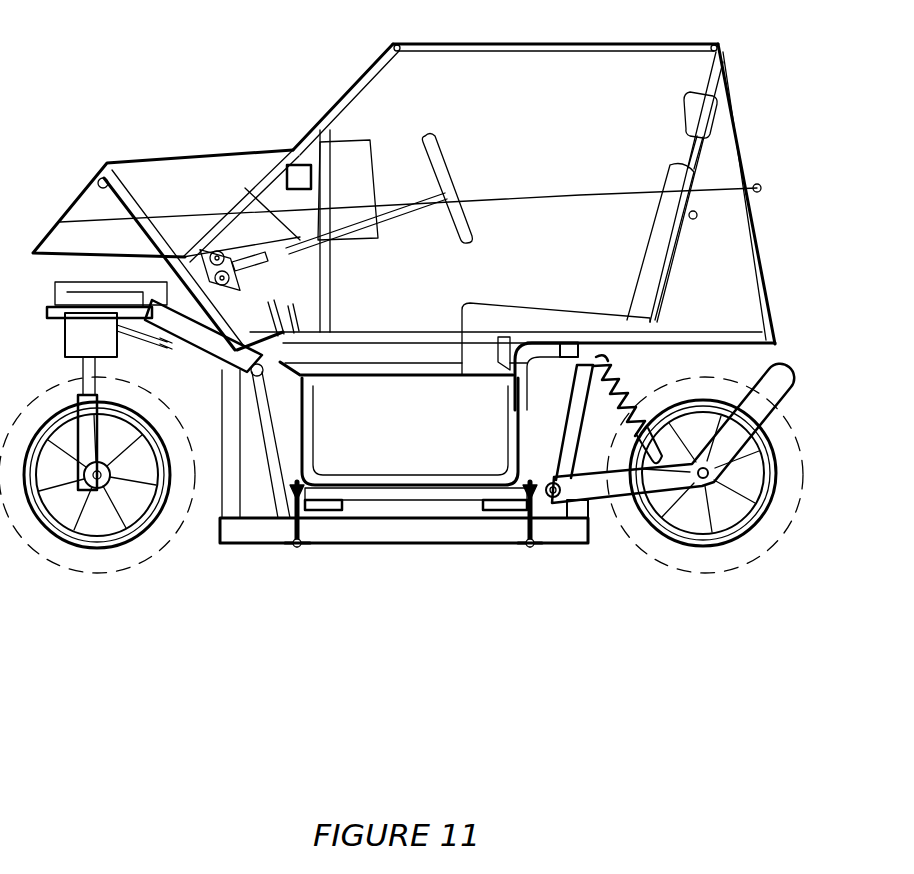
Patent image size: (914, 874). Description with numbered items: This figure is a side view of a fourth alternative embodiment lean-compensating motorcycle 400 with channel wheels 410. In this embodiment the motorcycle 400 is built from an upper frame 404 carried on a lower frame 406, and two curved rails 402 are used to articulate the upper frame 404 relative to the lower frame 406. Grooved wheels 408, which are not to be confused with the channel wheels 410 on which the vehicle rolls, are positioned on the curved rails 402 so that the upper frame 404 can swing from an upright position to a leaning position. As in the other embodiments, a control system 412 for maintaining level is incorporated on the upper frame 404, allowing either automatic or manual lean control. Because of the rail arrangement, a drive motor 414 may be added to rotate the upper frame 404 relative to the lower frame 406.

The motorcycle 400 is at (180, 55).
The curved rails 402 is at (323, 515).
The upper frame 404 is at (366, 502).
The lower frame 406 is at (572, 547).
The grooved wheels 408 is at (291, 554).
The channel wheels 410 is at (30, 545).
The control system 412 is at (294, 160).
The drive motor 414 is at (300, 553).